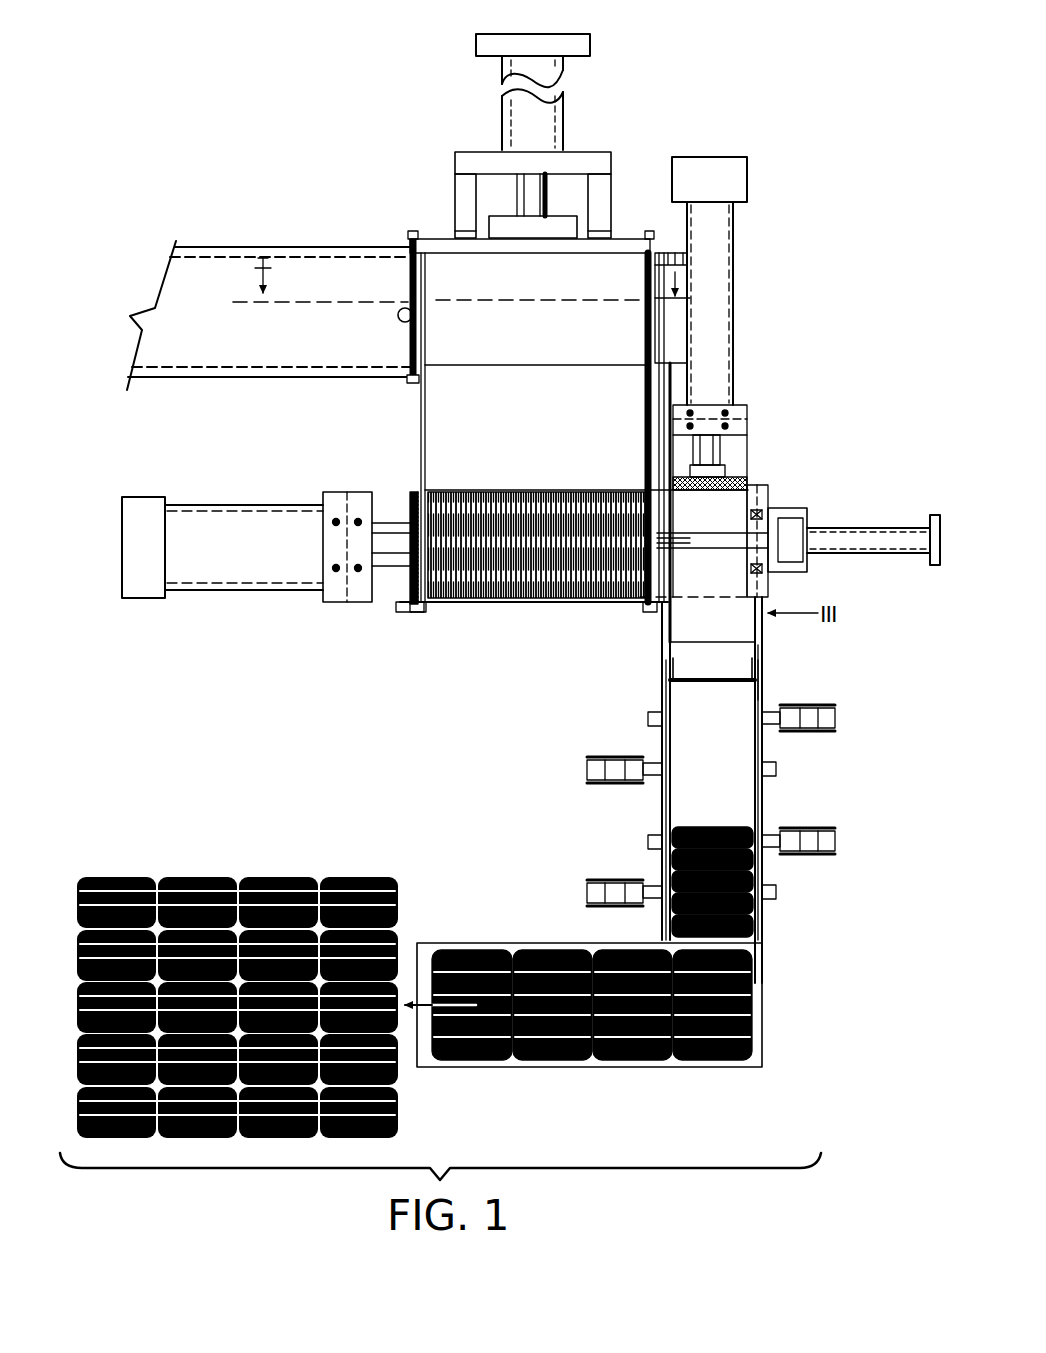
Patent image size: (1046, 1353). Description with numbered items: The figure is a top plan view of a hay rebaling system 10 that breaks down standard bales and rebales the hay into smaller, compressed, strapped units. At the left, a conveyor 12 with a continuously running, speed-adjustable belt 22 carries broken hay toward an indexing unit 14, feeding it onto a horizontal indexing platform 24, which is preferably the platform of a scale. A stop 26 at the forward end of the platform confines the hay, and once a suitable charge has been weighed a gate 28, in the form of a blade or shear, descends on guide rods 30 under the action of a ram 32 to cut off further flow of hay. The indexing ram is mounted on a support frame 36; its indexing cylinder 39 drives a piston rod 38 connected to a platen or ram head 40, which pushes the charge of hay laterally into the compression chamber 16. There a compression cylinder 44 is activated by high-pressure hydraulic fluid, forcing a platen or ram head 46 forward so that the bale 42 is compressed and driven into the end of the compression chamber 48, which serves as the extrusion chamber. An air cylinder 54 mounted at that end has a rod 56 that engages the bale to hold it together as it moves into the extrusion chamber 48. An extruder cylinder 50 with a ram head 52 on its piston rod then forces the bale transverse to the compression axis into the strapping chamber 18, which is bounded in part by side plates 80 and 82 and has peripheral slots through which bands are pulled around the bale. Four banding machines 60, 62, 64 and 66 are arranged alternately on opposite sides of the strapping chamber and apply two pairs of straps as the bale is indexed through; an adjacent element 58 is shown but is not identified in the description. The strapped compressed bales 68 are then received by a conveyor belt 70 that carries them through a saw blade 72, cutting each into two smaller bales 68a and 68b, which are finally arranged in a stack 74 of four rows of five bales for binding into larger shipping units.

The hay rebaling system 10 is at (345, 96).
The conveyor 12 is at (281, 231).
The indexing unit 14 is at (520, 373).
The compression chamber 16 is at (520, 470).
The strapping chamber 18 is at (640, 735).
The belt 22 is at (317, 257).
The indexing platform 24 is at (632, 262).
The stop 26 is at (680, 313).
The gate 28 is at (408, 284).
The guide rods 30 is at (410, 242).
The ram 32 is at (398, 321).
The support frame 36 is at (611, 176).
The piston rod 38 is at (548, 198).
The indexing cylinder 39 is at (559, 84).
The platen 40 is at (545, 245).
The bale 42 is at (528, 600).
The compression cylinder 44 is at (272, 505).
The platen 46 is at (436, 600).
The end of compression chamber 48 is at (766, 508).
The extruder cylinder 50 is at (718, 322).
The ram head 52 is at (747, 480).
The air cylinder 54 is at (847, 530).
The rod 56 is at (727, 540).
The chute 58 is at (717, 728).
The banding machine 60 is at (800, 705).
The banding machine 62 is at (641, 757).
The banding machine 64 is at (797, 828).
The banding machine 66 is at (640, 880).
The compressed bales 68 is at (762, 920).
The smaller bale 68a is at (472, 950).
The smaller bale 68b is at (475, 1062).
The conveyor belt 70 is at (583, 1006).
The saw blade 72 is at (568, 1062).
The stack 74 is at (240, 870).
The side plate 80 is at (662, 690).
The side plate 82 is at (765, 697).